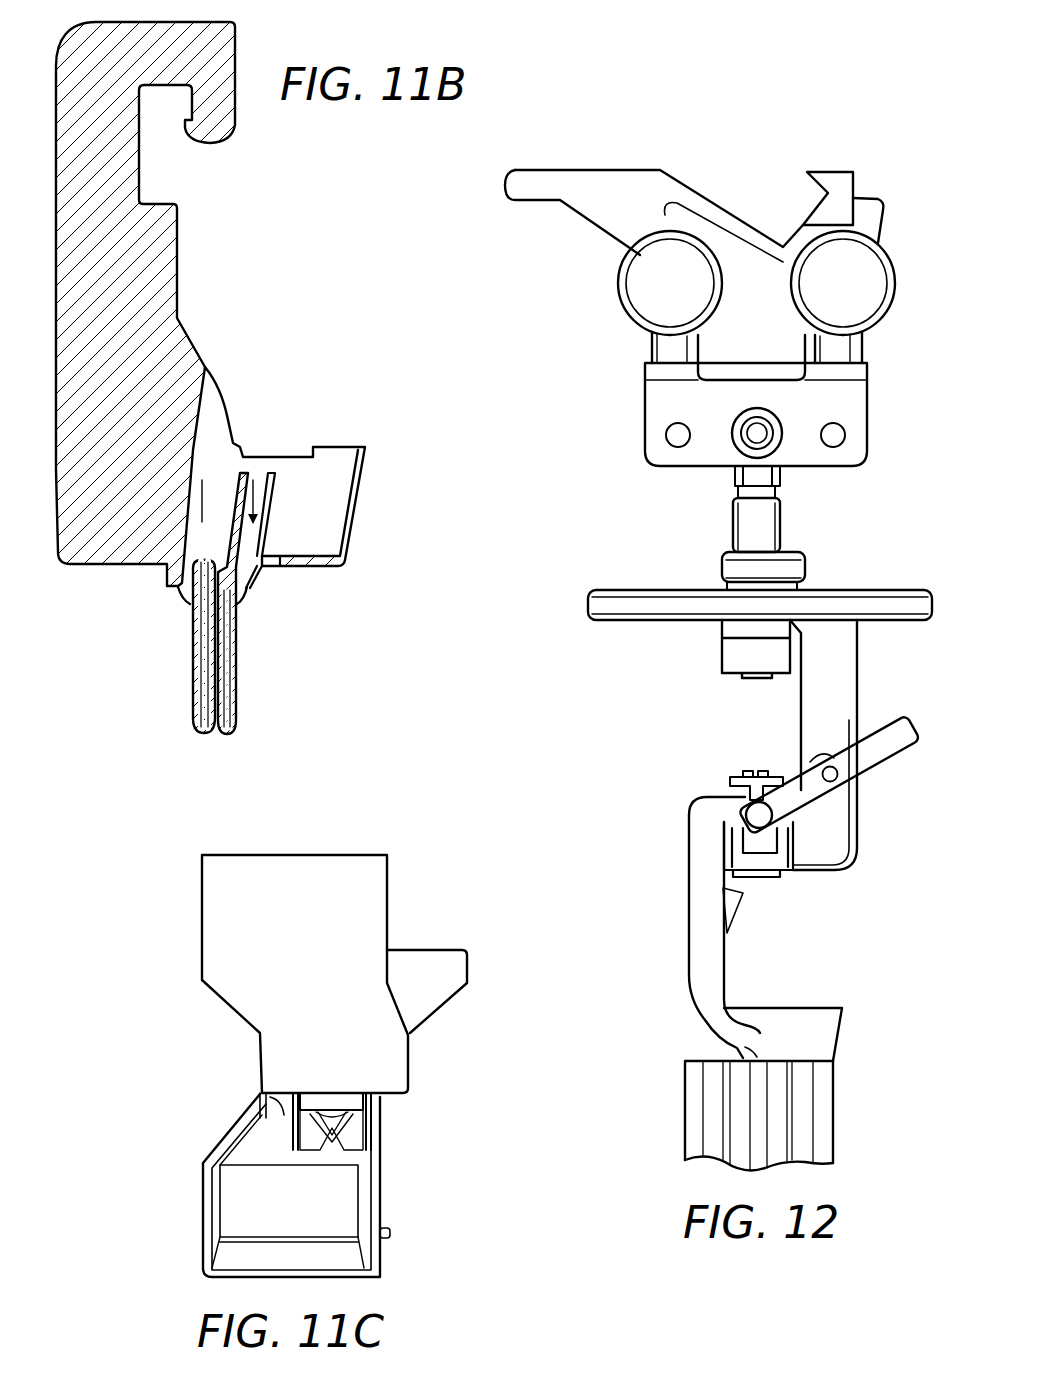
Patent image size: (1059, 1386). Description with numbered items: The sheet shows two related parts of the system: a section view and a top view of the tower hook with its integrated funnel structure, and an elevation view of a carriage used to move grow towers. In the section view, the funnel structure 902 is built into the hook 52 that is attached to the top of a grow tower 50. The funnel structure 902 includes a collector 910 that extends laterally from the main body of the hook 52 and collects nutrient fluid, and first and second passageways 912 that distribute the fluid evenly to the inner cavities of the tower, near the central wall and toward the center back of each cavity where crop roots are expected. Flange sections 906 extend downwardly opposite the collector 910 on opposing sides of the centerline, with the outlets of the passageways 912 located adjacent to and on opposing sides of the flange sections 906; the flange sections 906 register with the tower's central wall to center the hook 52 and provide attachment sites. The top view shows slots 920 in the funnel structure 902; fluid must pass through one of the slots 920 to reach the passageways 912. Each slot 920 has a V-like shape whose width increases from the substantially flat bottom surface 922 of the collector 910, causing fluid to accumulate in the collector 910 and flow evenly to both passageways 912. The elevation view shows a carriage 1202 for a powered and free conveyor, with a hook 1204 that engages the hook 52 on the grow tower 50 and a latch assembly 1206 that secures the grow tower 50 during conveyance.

In FIG. 11B, the funnel structure 902 is at (276, 550).
In FIG. 11C, the funnel structure 902 is at (277, 1066).
In FIG. 11B, the flange sections 906 is at (195, 683).
In FIG. 11B, the collector 910 is at (355, 510).
In FIG. 11C, the collector 910 is at (203, 1230).
In FIG. 11B, the passageways 912 is at (188, 596).
In FIG. 11C, the passageways 912 is at (342, 1124).
In FIG. 11C, the slots 920 is at (290, 1135).
In FIG. 11C, the bottom surface 922 is at (294, 1201).
In FIG. 12, the carriage 1202 is at (845, 466).
In FIG. 12, the hook 1204 is at (860, 672).
In FIG. 12, the latch assembly 1206 is at (885, 767).
In FIG. 12, the hook 52 is at (685, 878).
In FIG. 12, the grow tower 50 is at (835, 1098).